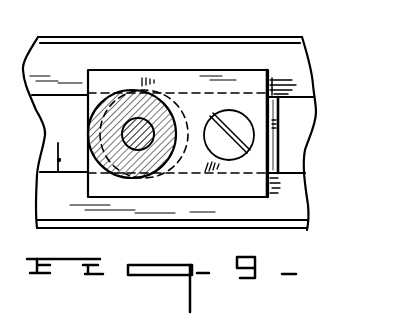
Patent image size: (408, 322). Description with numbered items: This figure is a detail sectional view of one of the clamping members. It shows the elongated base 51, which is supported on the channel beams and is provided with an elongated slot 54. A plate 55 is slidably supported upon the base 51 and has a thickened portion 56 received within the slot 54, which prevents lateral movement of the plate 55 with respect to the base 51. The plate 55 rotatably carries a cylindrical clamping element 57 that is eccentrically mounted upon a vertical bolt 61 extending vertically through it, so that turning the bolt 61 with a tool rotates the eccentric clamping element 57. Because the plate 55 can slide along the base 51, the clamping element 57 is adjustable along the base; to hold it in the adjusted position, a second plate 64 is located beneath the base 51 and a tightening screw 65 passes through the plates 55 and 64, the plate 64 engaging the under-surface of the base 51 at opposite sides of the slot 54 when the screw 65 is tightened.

The base 51 is at (73, 42).
The elongated slot 54 is at (58, 148).
The plate 55 is at (207, 78).
The thickened portion 56 is at (200, 176).
The cylindrical clamping element 57 is at (176, 93).
The vertical bolt 61 is at (97, 117).
The second plate 64 is at (272, 136).
The tightening screw 65 is at (268, 93).